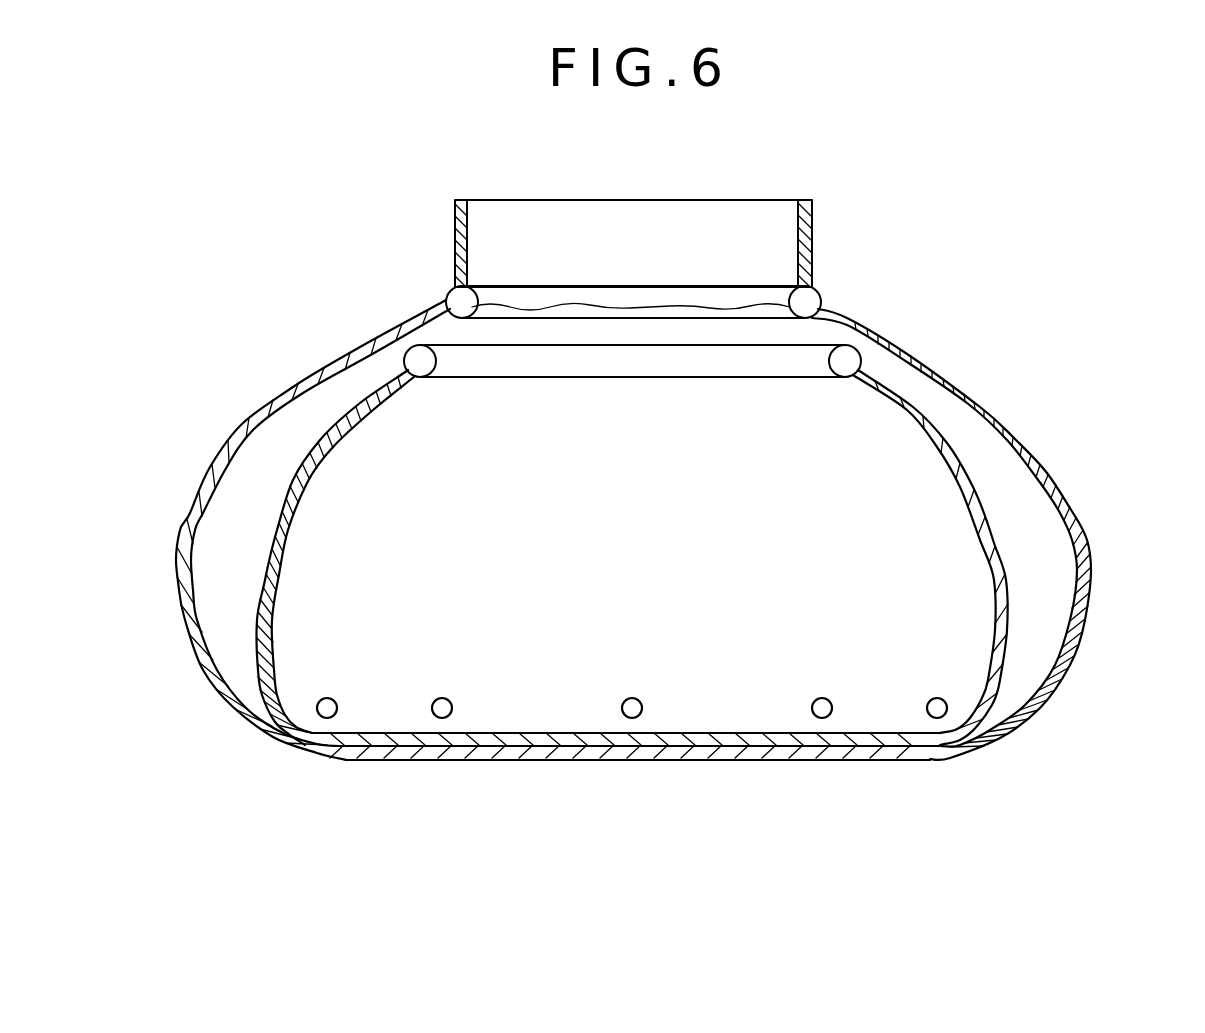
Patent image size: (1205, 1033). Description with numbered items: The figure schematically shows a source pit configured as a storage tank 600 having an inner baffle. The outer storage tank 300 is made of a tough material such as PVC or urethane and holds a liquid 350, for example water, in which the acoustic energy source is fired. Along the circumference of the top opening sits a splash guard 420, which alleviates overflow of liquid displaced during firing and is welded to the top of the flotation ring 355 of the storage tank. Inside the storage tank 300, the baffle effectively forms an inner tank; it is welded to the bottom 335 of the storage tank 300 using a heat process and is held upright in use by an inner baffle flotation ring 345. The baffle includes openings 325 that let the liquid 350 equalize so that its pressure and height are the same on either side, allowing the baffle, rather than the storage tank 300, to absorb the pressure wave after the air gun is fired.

The storage tank 600 is at (1036, 187).
The splash guard 420 is at (452, 245).
The flotation ring 355 is at (723, 284).
The liquid 350 is at (556, 304).
The inner baffle flotation ring 345 is at (730, 363).
The storage tank 300 is at (1030, 426).
The bottom 335 is at (309, 760).
The openings 325 is at (268, 710).